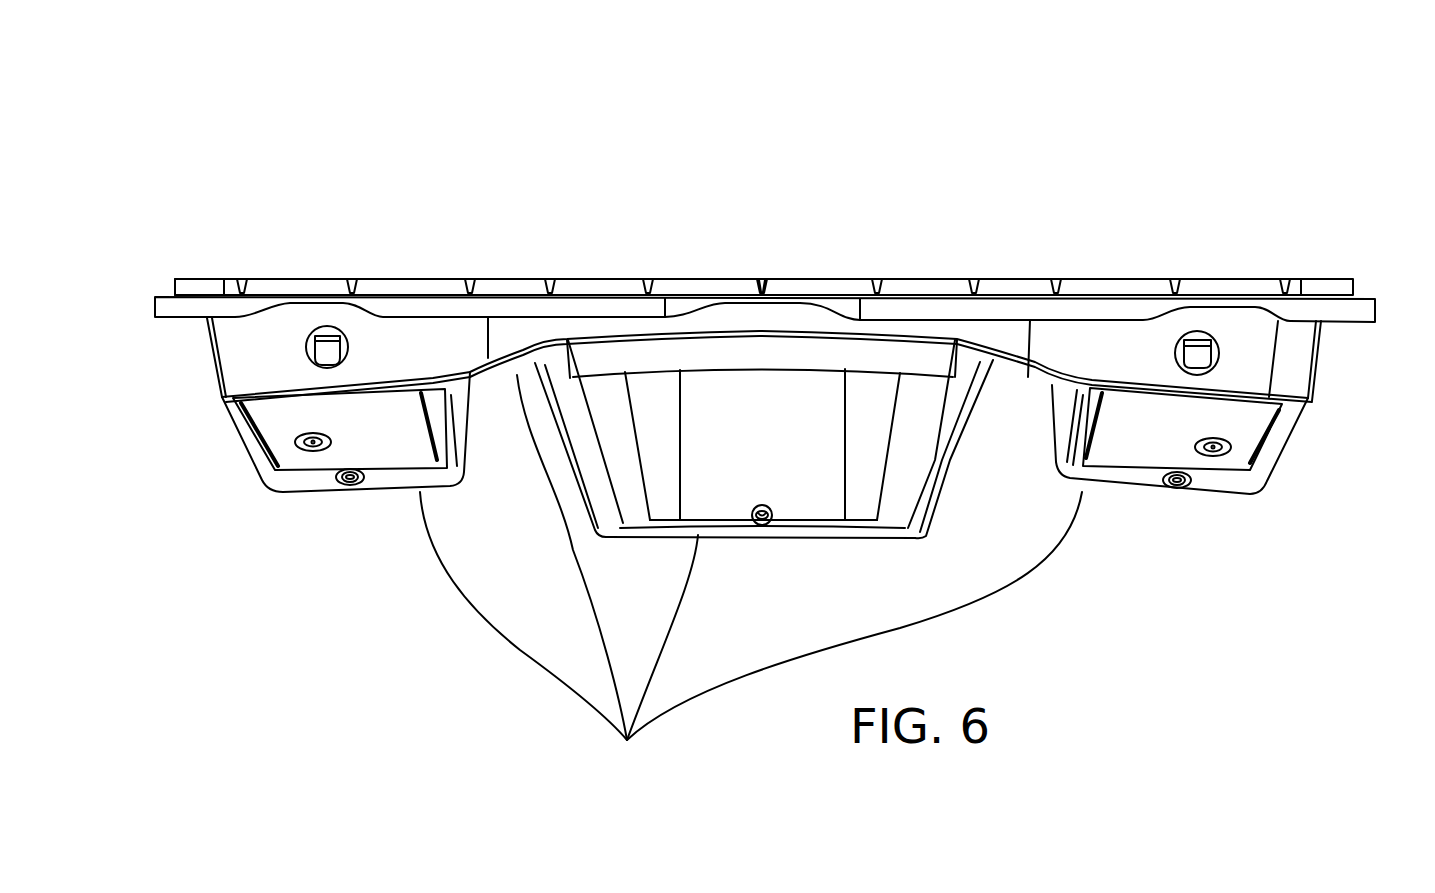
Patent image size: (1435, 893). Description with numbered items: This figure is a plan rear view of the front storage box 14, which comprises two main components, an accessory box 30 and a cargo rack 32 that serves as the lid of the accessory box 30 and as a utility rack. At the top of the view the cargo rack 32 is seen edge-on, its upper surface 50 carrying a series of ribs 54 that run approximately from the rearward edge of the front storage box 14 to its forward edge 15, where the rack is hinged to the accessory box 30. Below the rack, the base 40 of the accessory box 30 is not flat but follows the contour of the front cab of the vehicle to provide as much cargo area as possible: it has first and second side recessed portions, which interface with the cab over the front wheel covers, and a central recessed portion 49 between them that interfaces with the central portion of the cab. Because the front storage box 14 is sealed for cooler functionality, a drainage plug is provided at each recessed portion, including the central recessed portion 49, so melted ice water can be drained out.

The front storage box 14 is at (827, 148).
The forward edge 15 is at (1366, 310).
The accessory box 30 is at (210, 357).
The cargo rack 32 is at (197, 279).
The base 40 is at (751, 574).
The central recessed portion 49 is at (917, 470).
The upper surface 50 is at (1325, 279).
The ribs 54 is at (375, 287).